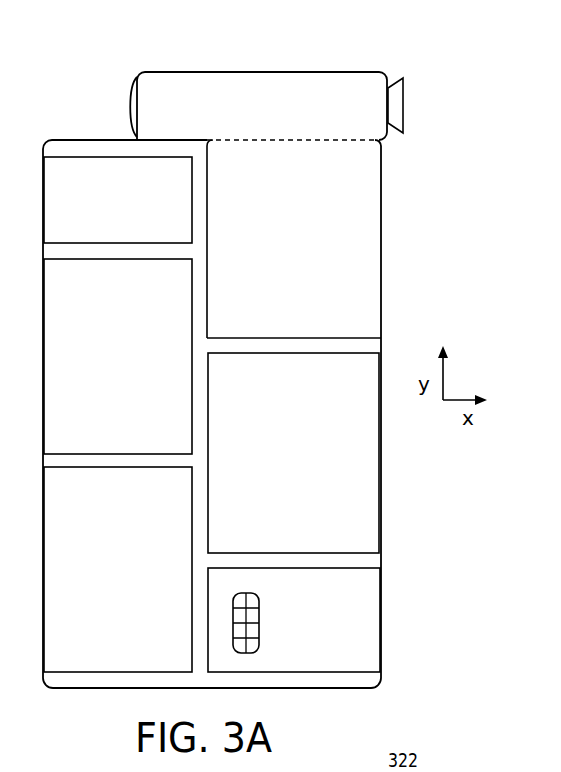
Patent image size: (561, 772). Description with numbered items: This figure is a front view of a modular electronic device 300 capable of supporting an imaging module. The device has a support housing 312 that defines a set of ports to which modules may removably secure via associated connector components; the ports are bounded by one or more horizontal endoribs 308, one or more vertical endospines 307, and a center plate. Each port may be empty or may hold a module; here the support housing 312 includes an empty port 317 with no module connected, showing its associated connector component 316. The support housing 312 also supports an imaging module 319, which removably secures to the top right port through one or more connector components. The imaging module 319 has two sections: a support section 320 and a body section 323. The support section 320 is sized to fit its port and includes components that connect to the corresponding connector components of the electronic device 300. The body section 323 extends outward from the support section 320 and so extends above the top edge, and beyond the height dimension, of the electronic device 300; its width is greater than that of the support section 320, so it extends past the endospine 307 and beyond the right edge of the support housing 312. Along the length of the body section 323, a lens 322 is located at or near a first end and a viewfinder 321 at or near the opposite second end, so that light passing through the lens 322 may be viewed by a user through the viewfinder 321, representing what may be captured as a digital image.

The modular electronic device 300 is at (87, 50).
The endospine 307 is at (202, 312).
The endorib 308 is at (262, 345).
The support housing 312 is at (70, 147).
The connector component 316 is at (260, 632).
The empty port 317 is at (365, 629).
The imaging module 319 is at (273, 213).
The support section 320 is at (367, 252).
The viewfinder 321 is at (400, 100).
The lens 322 is at (133, 90).
The body section 323 is at (240, 90).